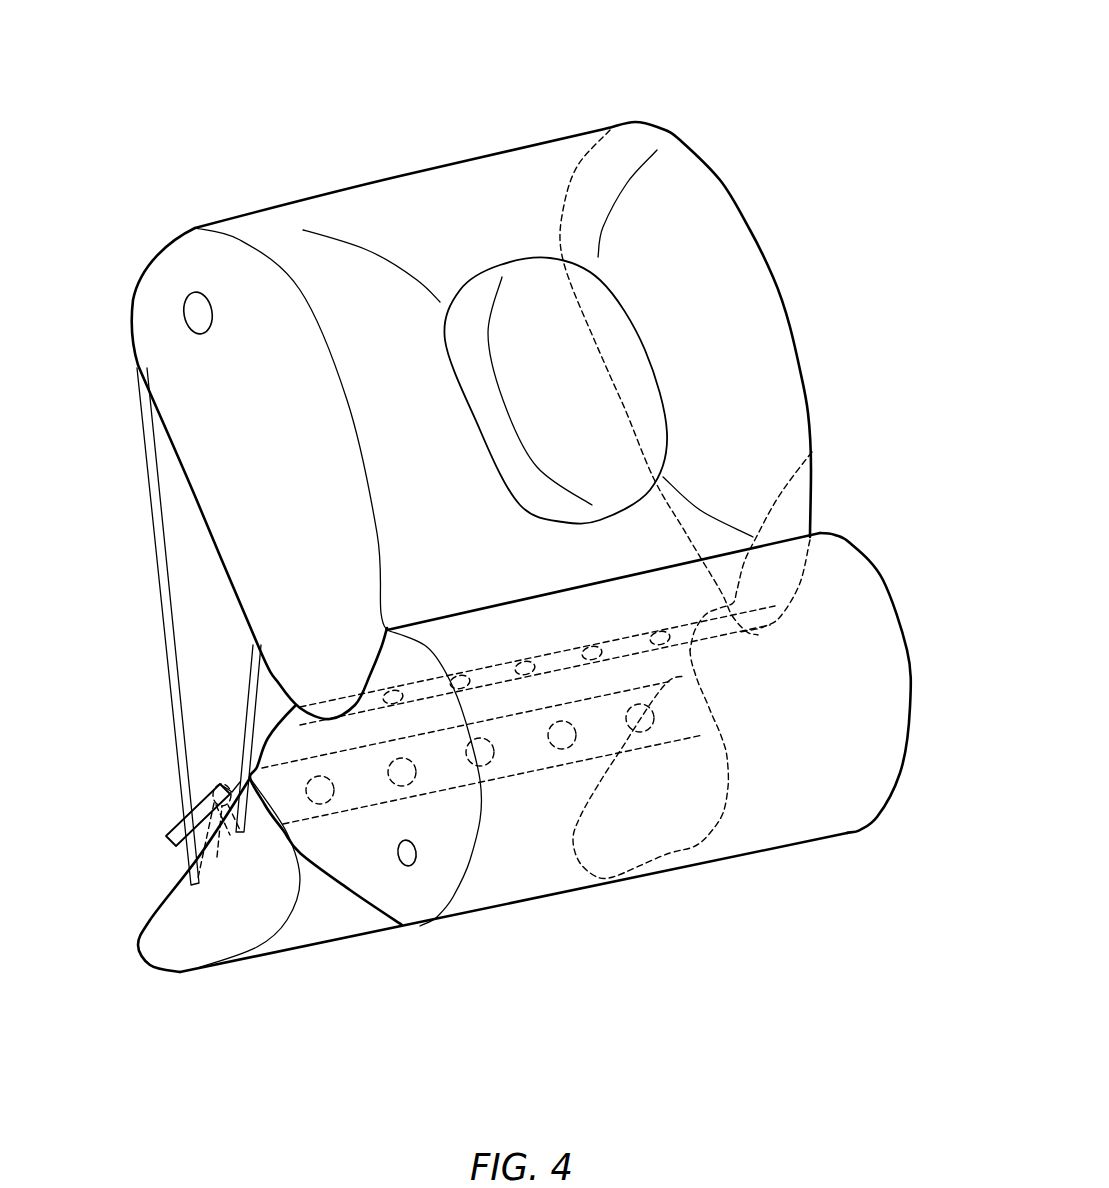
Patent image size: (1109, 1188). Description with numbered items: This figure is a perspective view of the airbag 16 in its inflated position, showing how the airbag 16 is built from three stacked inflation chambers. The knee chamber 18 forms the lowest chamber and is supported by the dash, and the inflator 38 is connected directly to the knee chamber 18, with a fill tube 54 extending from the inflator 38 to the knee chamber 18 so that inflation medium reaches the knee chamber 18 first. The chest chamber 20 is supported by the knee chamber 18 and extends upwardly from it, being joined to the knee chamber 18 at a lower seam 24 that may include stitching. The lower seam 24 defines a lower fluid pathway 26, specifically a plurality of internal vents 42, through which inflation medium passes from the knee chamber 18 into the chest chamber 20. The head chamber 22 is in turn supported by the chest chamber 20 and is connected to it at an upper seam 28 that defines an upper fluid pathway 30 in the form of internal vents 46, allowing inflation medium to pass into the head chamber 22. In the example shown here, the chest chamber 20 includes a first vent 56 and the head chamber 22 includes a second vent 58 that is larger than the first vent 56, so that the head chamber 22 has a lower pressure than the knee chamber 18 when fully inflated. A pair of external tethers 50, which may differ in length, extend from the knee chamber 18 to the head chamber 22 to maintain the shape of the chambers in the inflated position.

The airbag 16 is at (742, 76).
The knee chamber 18 is at (307, 960).
The chest chamber 20 is at (857, 600).
The head chamber 22 is at (472, 182).
The lower seam 24 is at (675, 716).
The lower fluid pathway 26 is at (535, 1001).
The upper seam 28 is at (817, 447).
The upper fluid pathway 30 is at (660, 638).
The inflator 38 is at (172, 838).
The internal vents 42 is at (636, 731).
The internal vents 46 is at (470, 621).
The tethers 50 is at (245, 713).
The fill tube 54 is at (217, 857).
The first vent 56 is at (403, 842).
The second vent 58 is at (187, 292).